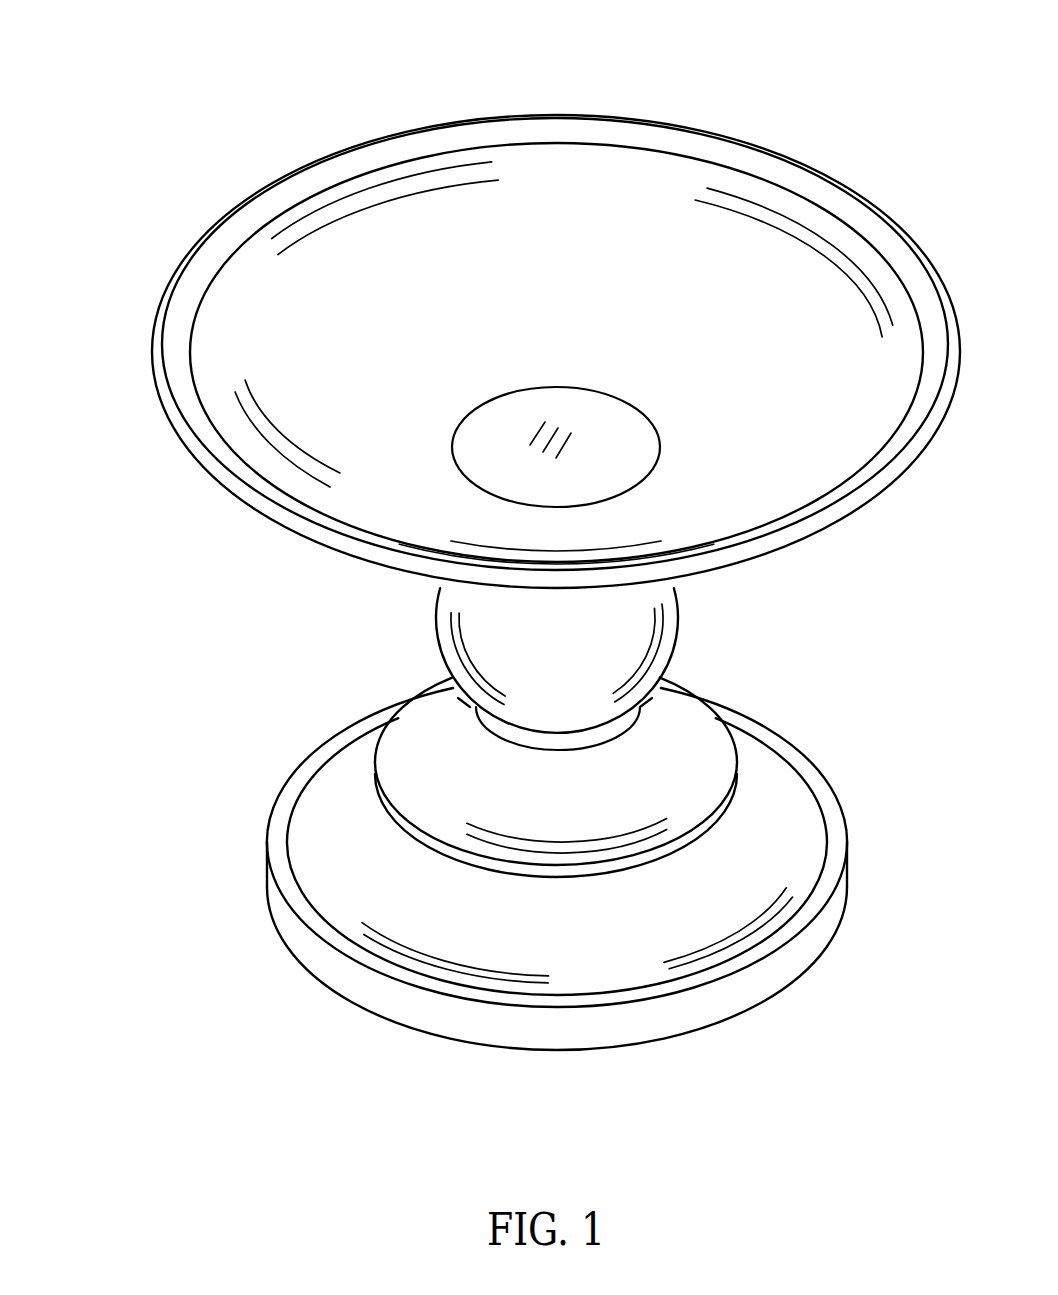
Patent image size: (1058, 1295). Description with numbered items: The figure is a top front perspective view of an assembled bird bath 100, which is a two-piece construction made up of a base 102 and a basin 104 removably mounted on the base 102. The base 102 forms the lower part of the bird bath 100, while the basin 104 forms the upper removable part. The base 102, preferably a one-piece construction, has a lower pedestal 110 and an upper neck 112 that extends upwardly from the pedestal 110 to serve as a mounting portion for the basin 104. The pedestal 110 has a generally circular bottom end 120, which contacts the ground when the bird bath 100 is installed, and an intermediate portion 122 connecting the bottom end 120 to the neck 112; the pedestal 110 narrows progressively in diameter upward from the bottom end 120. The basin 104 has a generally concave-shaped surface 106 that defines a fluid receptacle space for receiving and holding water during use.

The bird bath 100 is at (300, 98).
The base 102 is at (228, 754).
The basin 104 is at (218, 546).
The concave-shaped surface 106 is at (638, 240).
The pedestal 110 is at (813, 772).
The neck 112 is at (668, 654).
The bottom end 120 is at (820, 940).
The intermediate portion 122 is at (345, 767).